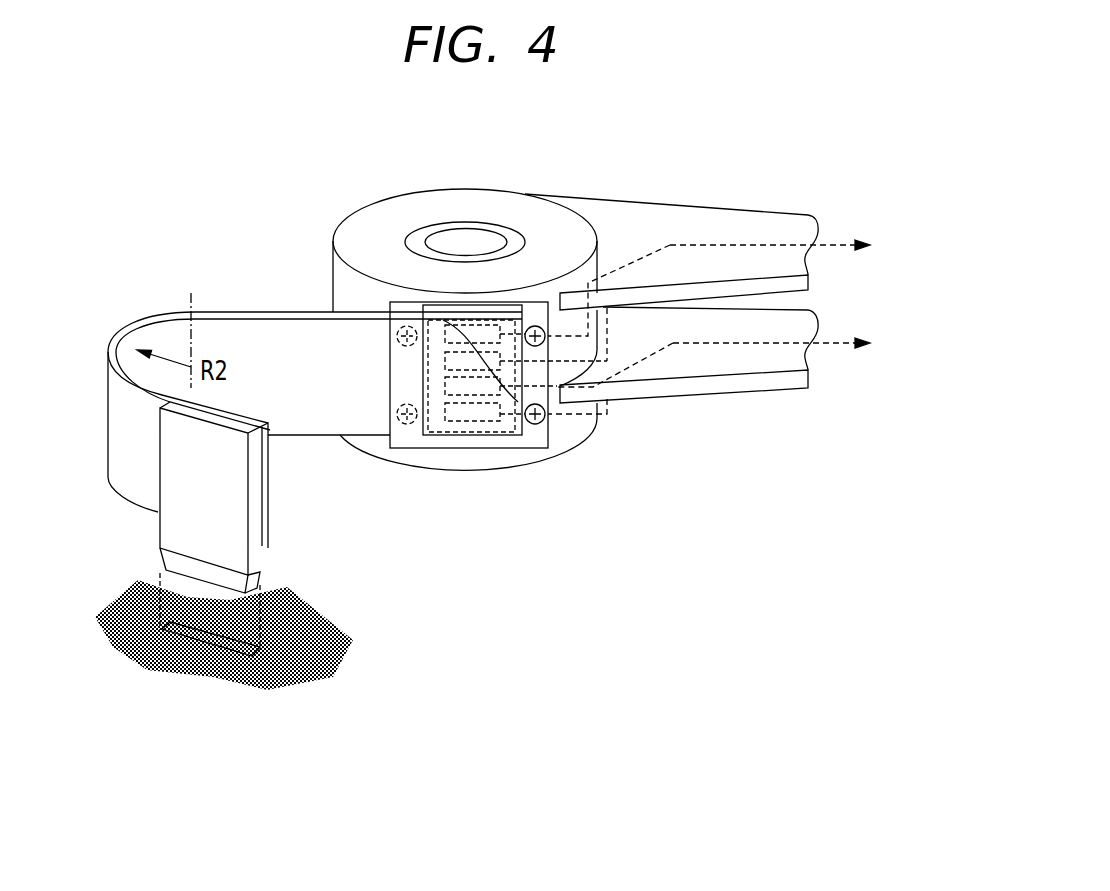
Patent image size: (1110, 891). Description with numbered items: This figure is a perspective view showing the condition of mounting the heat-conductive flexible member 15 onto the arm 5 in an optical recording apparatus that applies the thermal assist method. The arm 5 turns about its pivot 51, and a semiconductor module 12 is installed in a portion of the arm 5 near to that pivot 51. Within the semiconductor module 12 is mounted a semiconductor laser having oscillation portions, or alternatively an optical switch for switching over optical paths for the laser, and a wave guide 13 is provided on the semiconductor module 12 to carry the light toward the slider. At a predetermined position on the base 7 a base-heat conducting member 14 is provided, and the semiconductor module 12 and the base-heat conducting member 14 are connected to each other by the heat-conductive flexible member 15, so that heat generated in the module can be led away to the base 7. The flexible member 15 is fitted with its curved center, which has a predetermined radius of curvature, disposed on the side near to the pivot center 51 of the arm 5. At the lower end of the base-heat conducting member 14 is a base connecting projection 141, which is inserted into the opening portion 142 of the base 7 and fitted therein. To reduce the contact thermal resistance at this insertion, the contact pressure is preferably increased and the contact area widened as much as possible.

The arm 5 is at (672, 218).
The pivot 51 is at (468, 222).
The wave guide 13 is at (768, 245).
The semiconductor module 12 is at (465, 387).
The heat-conductive flexible member 15 is at (275, 335).
The base-heat conducting member 14 is at (212, 518).
The base connecting projection 141 is at (177, 566).
The opening portion 142 is at (205, 640).
The base 7 is at (137, 648).